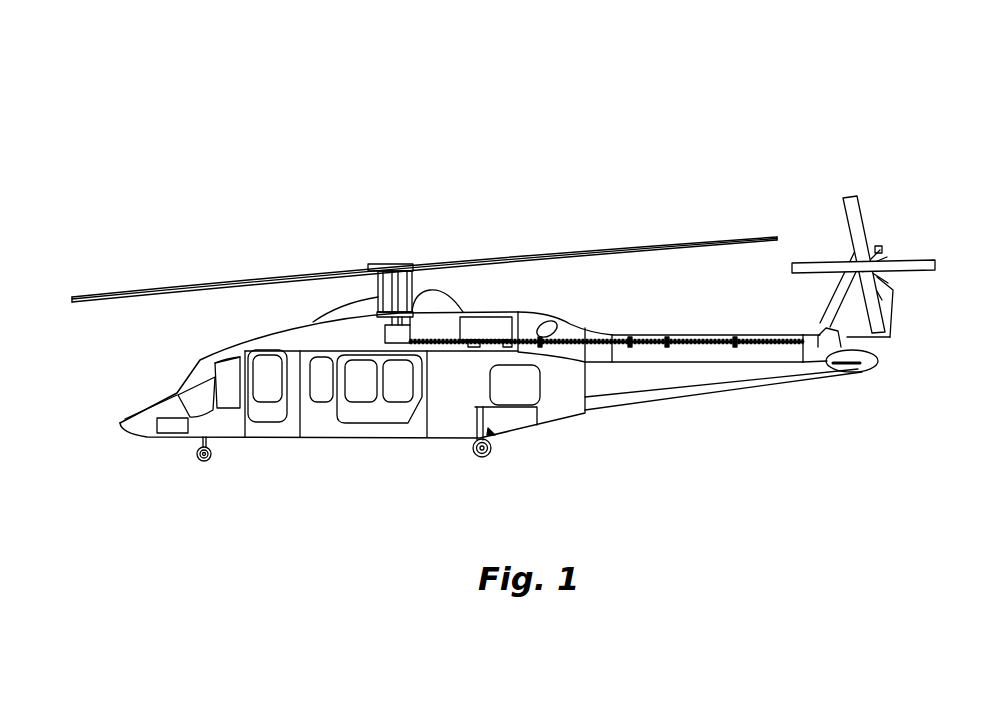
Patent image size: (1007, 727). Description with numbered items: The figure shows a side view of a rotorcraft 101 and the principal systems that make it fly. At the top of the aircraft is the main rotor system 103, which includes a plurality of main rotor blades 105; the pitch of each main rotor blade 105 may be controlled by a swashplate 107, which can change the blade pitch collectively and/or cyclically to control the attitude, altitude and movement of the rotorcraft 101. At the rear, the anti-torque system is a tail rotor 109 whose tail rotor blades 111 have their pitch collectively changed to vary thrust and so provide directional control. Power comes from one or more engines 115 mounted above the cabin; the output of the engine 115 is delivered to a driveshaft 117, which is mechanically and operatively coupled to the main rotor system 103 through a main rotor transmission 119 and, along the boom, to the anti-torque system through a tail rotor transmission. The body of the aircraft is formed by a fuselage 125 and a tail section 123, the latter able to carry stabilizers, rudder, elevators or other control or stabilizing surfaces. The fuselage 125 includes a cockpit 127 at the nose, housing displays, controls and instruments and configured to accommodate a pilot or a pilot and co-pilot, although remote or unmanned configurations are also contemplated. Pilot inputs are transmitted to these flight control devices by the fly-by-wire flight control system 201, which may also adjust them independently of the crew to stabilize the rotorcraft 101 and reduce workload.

The rotorcraft 101 is at (216, 41).
The main rotor system 103 is at (408, 248).
The main rotor blade 105 is at (662, 244).
The swashplate 107 is at (410, 313).
The tail rotor 109 is at (868, 181).
The tail rotor blade 111 is at (923, 260).
The engine 115 is at (499, 317).
The driveshaft 117 is at (437, 344).
The main rotor transmission 119 is at (385, 340).
The tail section 123 is at (707, 397).
The fuselage 125 is at (342, 440).
The cockpit 127 is at (182, 382).
The fly-by-wire flight control system 201 is at (158, 431).